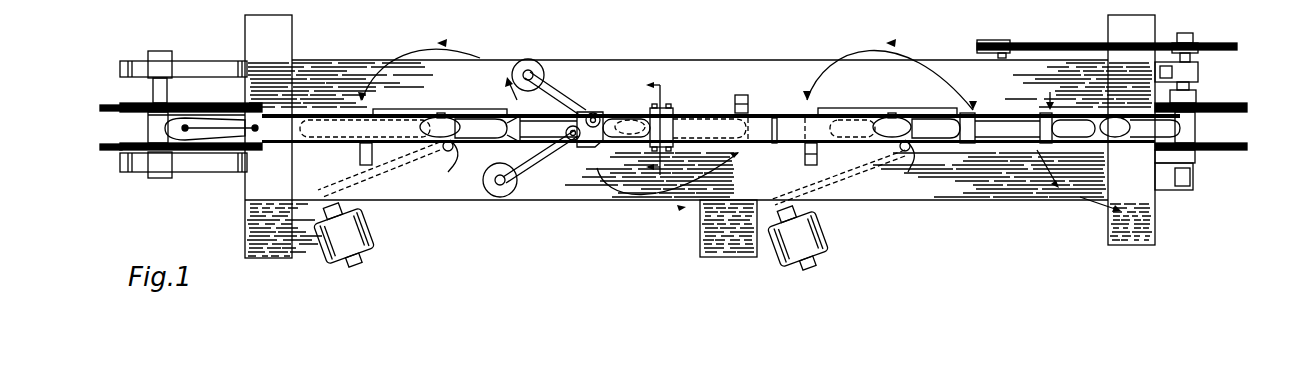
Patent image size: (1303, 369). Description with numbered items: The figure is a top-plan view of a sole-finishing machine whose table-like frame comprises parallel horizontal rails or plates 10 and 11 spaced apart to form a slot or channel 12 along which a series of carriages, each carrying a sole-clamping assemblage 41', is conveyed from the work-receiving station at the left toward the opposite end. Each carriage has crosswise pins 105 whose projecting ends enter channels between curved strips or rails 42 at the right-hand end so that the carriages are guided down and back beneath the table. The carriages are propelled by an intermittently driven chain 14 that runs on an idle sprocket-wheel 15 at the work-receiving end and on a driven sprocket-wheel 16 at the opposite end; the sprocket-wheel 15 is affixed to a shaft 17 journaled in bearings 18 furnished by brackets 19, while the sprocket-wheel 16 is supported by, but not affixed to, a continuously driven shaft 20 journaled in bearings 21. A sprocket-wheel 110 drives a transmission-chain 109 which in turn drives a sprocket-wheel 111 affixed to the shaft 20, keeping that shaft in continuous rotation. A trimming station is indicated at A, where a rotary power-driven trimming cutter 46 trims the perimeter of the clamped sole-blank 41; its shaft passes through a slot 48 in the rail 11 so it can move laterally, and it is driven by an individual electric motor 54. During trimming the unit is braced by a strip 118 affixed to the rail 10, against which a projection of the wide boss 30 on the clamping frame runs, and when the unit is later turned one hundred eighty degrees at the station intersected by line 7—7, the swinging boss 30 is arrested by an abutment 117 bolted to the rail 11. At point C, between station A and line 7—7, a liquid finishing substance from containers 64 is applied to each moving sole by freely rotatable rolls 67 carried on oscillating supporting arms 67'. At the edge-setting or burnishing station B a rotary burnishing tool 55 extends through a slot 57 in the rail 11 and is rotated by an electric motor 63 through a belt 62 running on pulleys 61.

The rail 10 is at (740, 68).
The rail 11 is at (565, 172).
The slot or channel 12 is at (773, 130).
The intermittently driven chain 14 is at (218, 104).
The idle sprocket-wheel 15 is at (122, 105).
The driven sprocket-wheel 16 is at (1200, 104).
The shaft 17 is at (160, 133).
The bearings 18 is at (158, 62).
The brackets 19 is at (122, 65).
The continuously driven shaft 20 is at (1198, 78).
The bearings 21 is at (1185, 190).
The boss 30 is at (512, 113).
The sole-blank 41 is at (775, 104).
The sole-clamping assemblage 41' is at (978, 82).
The curved strips or rails 42 is at (100, 108).
The trimming cutter 46 is at (465, 156).
The slot 48 is at (427, 150).
The electric motor 54 is at (345, 268).
The burnishing tool 55 is at (946, 100).
The slot 57 is at (912, 164).
The pulleys 61 is at (832, 177).
The belt 62 is at (840, 172).
The electric motor 63 is at (812, 243).
The containers 64 is at (530, 72).
The rolls 67 is at (570, 152).
The supporting arms 67' is at (578, 70).
The section line 7 is at (668, 145).
The rods or pins 105 is at (1115, 142).
The transmission-chain 109 is at (1048, 43).
The sprocket-wheel 110 is at (990, 42).
The sprocket-wheel 111 is at (1193, 45).
The abutment 117 is at (360, 155).
The bracing strip 118 is at (492, 99).
The trimming station A is at (427, 182).
The edge-setting or burnishing station B is at (928, 174).
The finishing-substance applying location C is at (473, 70).